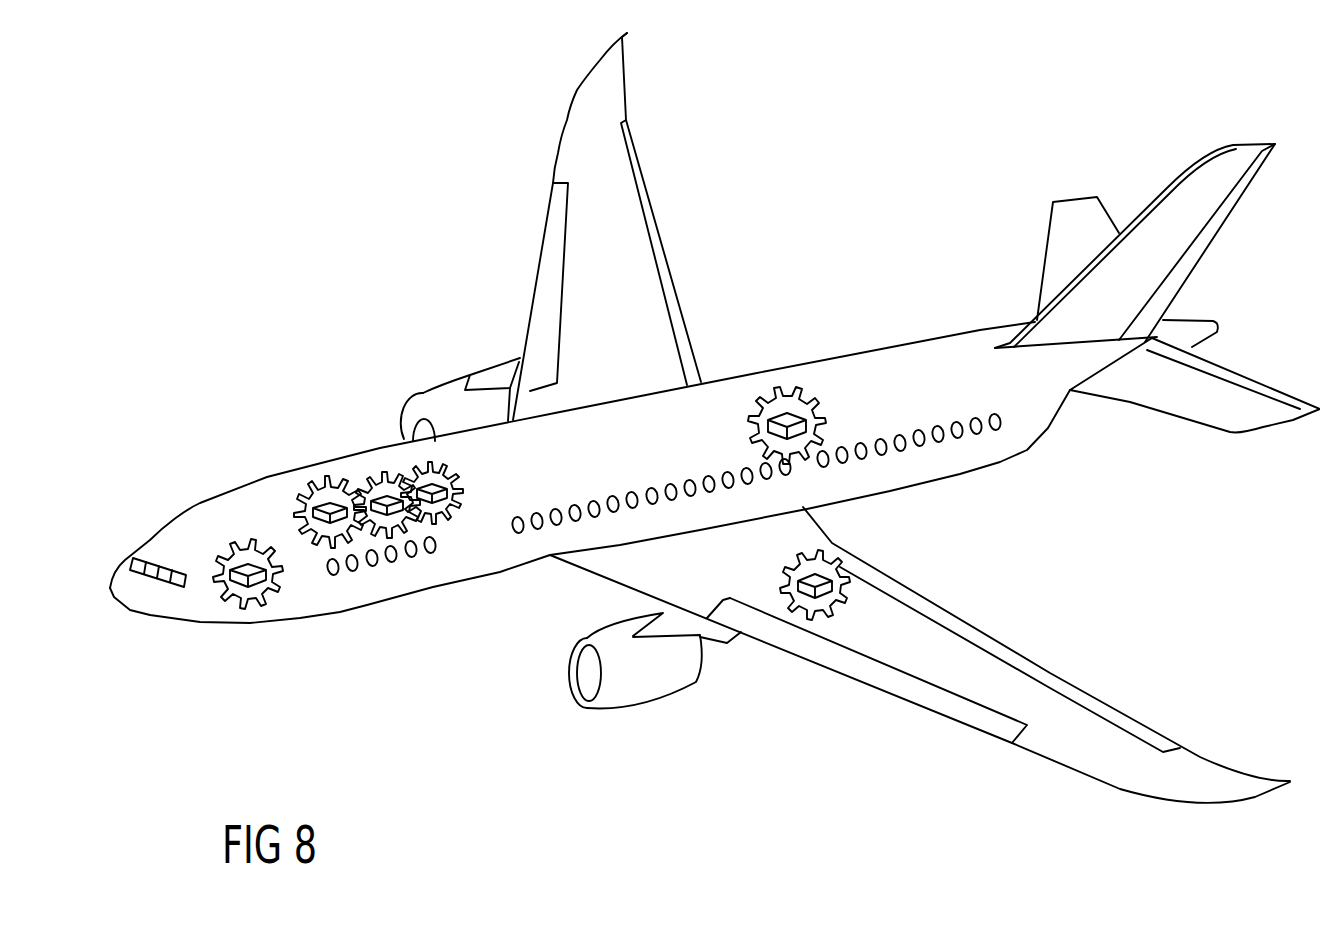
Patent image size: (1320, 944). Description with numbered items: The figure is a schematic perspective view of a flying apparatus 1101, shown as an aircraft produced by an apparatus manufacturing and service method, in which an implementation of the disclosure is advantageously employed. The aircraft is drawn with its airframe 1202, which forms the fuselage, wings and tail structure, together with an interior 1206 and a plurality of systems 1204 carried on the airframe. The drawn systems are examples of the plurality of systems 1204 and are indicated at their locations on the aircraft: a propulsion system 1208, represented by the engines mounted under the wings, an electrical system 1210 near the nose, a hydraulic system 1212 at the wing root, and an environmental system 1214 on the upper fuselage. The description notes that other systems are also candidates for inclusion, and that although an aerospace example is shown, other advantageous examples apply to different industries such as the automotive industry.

The flying apparatus 1101 is at (282, 120).
The airframe 1202 is at (470, 672).
The plurality of systems 1204 is at (900, 282).
The interior 1206 is at (334, 486).
The propulsion system 1208 is at (443, 390).
The electrical system 1210 is at (248, 540).
The hydraulic system 1212 is at (813, 570).
The environmental system 1214 is at (775, 395).